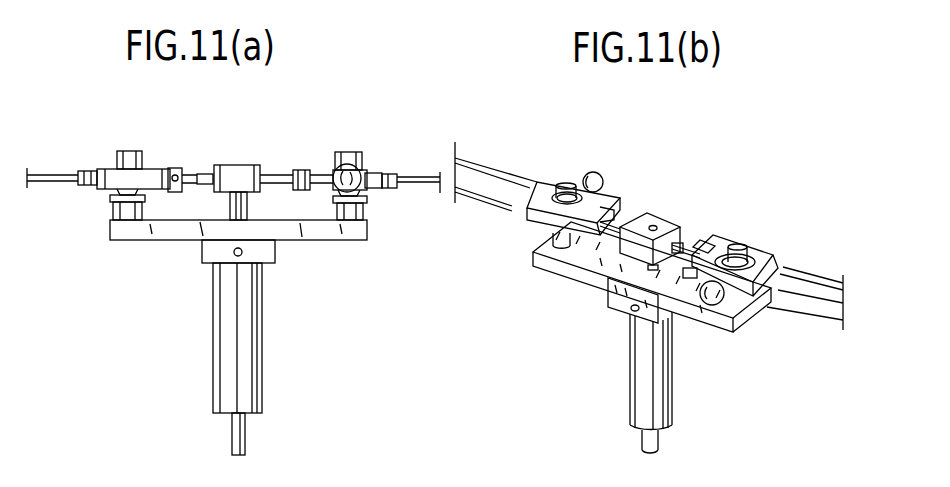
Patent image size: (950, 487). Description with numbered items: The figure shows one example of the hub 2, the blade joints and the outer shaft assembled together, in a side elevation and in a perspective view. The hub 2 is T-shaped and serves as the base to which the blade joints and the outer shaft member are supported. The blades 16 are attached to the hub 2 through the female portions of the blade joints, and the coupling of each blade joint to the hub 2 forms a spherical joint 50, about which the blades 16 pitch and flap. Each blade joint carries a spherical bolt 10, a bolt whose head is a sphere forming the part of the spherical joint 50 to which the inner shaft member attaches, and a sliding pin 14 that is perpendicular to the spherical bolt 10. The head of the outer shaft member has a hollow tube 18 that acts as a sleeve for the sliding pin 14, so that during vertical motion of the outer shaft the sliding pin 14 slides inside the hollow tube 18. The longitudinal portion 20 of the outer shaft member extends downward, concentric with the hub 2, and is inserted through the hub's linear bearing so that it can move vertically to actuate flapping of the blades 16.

In FIG. 11A, the hub 2 is at (253, 343).
In FIG. 11B, the hub 2 is at (663, 380).
In FIG. 11B, the spherical bolt 10 is at (597, 175).
In FIG. 11A, the sliding pin 14 is at (290, 188).
In FIG. 11A, the blade 16 is at (48, 172).
In FIG. 11B, the blade 16 is at (812, 290).
In FIG. 11A, the hollow tube 18 is at (203, 166).
In FIG. 11A, the longitudinal portion 20 is at (247, 433).
In FIG. 11B, the longitudinal portion 20 is at (663, 435).
In FIG. 11B, the spherical joint 50 is at (758, 245).